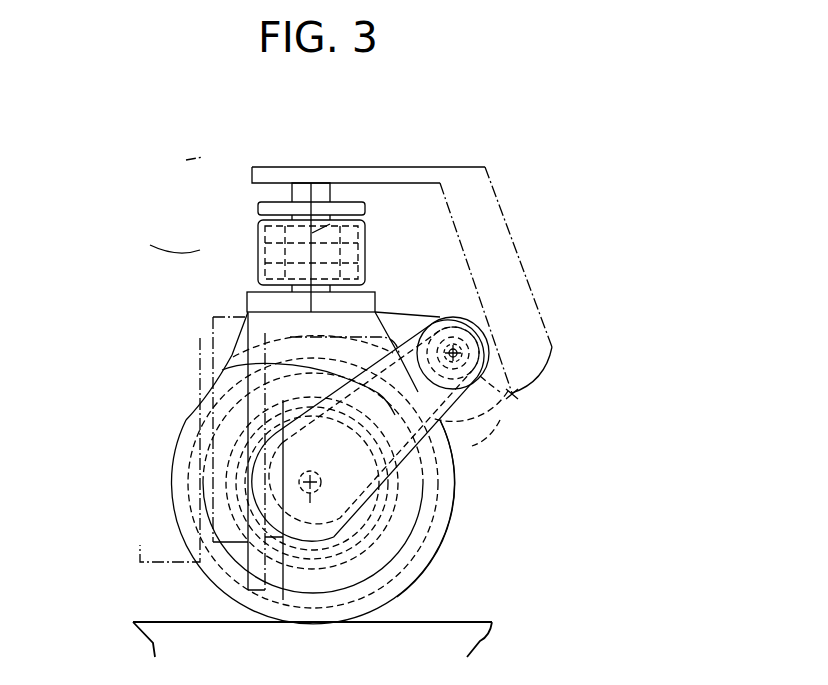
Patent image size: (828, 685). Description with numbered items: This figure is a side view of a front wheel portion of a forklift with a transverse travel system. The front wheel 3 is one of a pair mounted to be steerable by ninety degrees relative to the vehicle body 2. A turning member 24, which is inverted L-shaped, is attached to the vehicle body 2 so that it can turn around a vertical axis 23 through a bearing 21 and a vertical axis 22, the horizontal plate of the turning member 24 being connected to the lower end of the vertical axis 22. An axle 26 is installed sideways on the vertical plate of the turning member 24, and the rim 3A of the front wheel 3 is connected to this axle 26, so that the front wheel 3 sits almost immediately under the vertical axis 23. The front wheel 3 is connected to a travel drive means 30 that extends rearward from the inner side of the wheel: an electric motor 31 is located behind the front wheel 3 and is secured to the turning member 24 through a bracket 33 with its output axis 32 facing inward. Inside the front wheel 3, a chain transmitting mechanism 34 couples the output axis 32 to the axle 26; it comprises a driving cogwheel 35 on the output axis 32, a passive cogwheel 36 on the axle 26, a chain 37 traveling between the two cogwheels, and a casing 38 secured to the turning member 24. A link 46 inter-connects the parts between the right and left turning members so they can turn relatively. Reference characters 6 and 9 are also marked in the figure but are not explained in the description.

The vehicle body 2 is at (490, 268).
The front wheel 3 is at (422, 542).
The rim 3A is at (452, 512).
The caster unit 6 is at (182, 160).
The floor direction 9 is at (150, 245).
The bearing 21 is at (258, 248).
The vertical axis 22 is at (323, 190).
The vertical axis 23 is at (312, 233).
The turning member 24 is at (378, 296).
The axle 26 is at (284, 585).
The travel drive means 30 is at (480, 436).
The electric motor 31 is at (478, 433).
The output axis 32 is at (503, 338).
The bracket 33 is at (437, 316).
The chain transmitting mechanism 34 is at (427, 450).
The driving cogwheel 35 is at (512, 397).
The passive cogwheel 36 is at (345, 530).
The chain 37 is at (455, 455).
The casing 38 is at (300, 365).
The link 46 is at (366, 210).